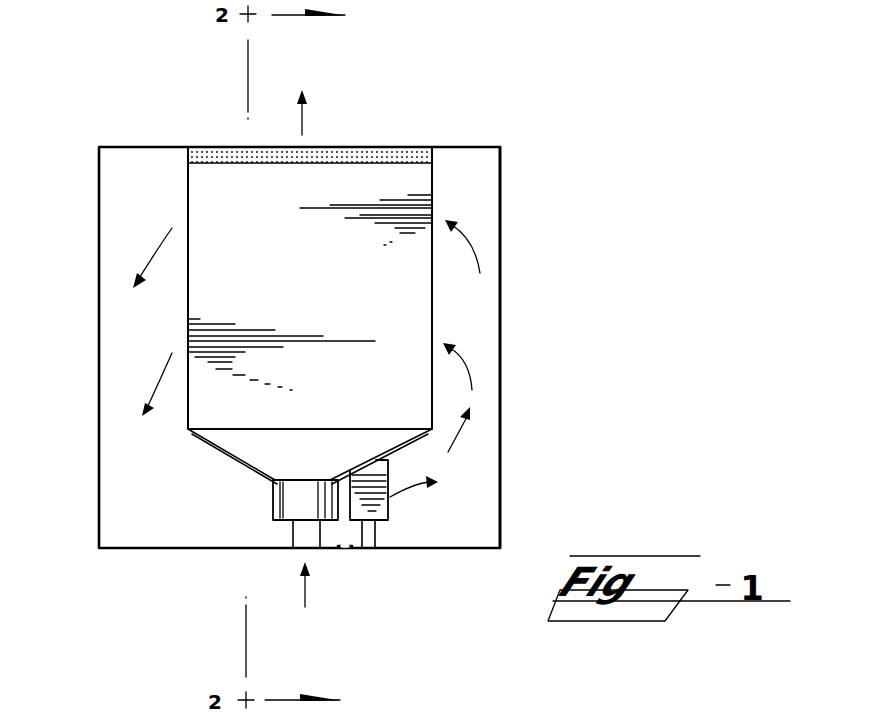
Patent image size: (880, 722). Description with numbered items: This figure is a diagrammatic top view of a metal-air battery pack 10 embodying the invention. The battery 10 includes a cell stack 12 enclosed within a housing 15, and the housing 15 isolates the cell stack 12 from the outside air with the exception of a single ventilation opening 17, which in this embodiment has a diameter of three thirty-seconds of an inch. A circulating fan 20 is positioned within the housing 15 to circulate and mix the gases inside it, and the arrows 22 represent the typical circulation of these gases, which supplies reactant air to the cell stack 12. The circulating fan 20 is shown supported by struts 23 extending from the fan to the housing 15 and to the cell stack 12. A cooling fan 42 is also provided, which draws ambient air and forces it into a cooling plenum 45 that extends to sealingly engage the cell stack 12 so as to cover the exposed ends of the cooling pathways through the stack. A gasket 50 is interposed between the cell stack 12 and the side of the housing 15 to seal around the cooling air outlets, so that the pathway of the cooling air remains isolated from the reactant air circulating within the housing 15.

The metal-air battery pack 10 is at (532, 378).
The cell stack 12 is at (298, 289).
The housing 15 is at (500, 472).
The ventilation opening 17 is at (345, 549).
The circulating fan 20 is at (388, 507).
The arrows 22 is at (480, 223).
The struts 23 is at (378, 535).
The cooling fan 42 is at (273, 498).
The cooling plenum 45 is at (193, 433).
The gasket 50 is at (357, 147).